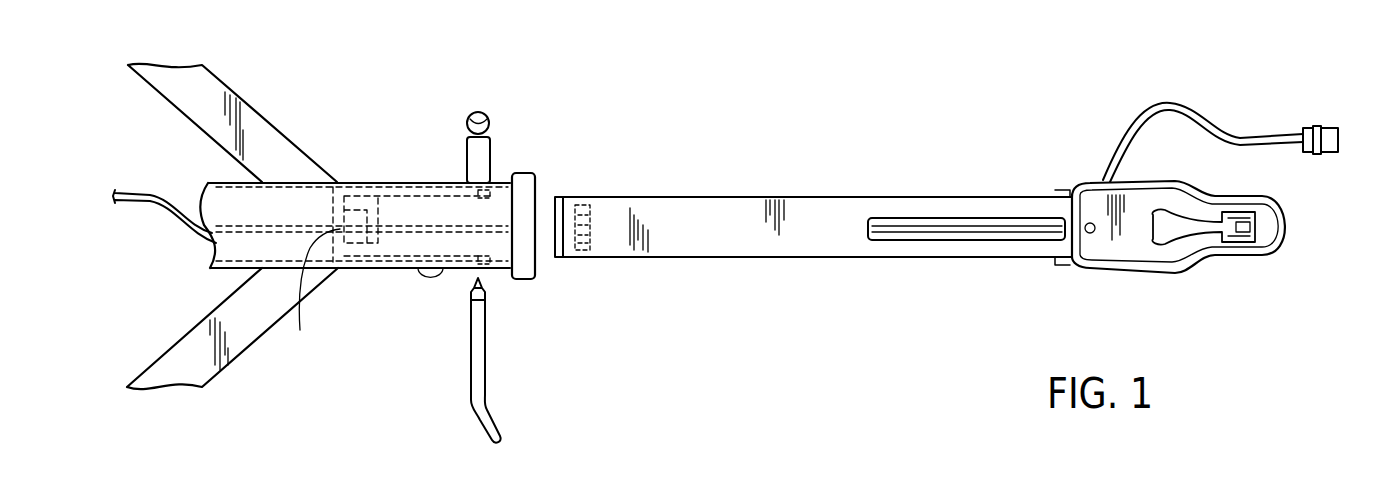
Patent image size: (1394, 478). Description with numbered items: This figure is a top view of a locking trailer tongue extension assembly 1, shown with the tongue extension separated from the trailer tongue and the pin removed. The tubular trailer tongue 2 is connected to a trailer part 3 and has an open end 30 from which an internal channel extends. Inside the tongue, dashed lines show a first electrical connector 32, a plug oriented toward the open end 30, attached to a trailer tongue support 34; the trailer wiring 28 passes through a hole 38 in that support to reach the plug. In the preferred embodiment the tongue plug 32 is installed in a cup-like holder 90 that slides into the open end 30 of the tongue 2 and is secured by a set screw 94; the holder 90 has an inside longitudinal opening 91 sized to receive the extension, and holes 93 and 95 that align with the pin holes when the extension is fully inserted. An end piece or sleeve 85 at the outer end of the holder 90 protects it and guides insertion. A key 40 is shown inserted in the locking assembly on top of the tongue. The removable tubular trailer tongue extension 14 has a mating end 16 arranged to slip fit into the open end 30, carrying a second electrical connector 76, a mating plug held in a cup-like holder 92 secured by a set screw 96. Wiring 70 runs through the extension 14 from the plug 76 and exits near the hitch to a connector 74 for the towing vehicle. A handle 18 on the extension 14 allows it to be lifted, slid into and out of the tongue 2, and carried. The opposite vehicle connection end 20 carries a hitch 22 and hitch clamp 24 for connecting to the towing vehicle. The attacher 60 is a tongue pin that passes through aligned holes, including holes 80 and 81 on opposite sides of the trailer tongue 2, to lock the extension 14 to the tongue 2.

The trailer tongue extension assembly 1 is at (1162, 76).
The tubular trailer tongue 2 is at (373, 268).
The trailer part 3 is at (170, 355).
The tubular trailer tongue extension 14 is at (928, 195).
The mating end 16 is at (577, 205).
The handle 18 is at (928, 240).
The vehicle connection end 20 is at (1113, 275).
The hitch 22 is at (1290, 228).
The hitch clamp 24 is at (1177, 232).
The wiring 28 is at (138, 190).
The open end 30 is at (537, 255).
The first electrical connector 32 is at (363, 226).
The trailer tongue support 34 is at (335, 206).
The hole 38 is at (318, 293).
The post 40 is at (487, 152).
The attacher 60 is at (477, 378).
The wiring 70 is at (1140, 108).
The connector 74 is at (1330, 128).
The second electrical connector 76 is at (575, 240).
The hole 80 is at (443, 268).
The hole 81 is at (467, 193).
The end piece or sleeve 85 is at (524, 182).
The cup-like holder 90 is at (425, 190).
The inside longitudinal opening 91 is at (537, 200).
The cup-like holder 92 is at (580, 200).
The hole 93 is at (482, 195).
The set screw 94 is at (433, 270).
The hole 95 is at (487, 262).
The set screw 96 is at (570, 248).